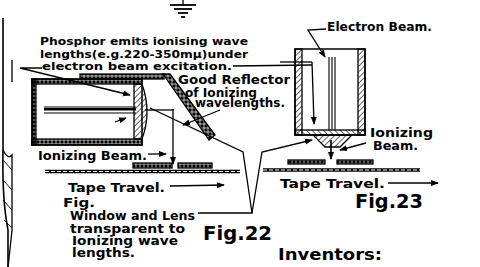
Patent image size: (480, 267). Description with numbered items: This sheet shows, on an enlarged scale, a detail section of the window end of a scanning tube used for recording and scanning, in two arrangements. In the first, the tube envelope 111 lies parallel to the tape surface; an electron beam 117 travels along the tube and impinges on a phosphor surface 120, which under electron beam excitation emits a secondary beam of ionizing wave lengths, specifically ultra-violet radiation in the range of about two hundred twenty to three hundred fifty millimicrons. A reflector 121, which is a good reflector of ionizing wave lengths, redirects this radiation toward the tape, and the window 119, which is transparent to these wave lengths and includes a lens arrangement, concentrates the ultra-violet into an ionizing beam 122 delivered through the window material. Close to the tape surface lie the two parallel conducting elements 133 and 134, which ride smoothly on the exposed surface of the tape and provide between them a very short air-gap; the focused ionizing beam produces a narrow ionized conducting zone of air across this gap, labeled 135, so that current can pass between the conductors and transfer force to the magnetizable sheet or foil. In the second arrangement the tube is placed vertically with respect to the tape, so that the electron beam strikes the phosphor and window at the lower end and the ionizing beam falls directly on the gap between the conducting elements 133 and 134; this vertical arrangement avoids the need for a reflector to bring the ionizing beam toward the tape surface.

In FIG. 22, the cathode ray tube envelope 111 is at (47, 94).
In FIG. 22, the electron beam 117 is at (44, 104).
In FIG. 23, the electron beam 117 is at (321, 79).
In FIG. 22, the phosphor screen and lens 119 is at (145, 140).
In FIG. 22, the phosphor layer 120 is at (145, 88).
In FIG. 22, the reflector of ionizing wavelengths 121 is at (203, 130).
In FIG. 22, the ionizing beam 122 is at (174, 150).
In FIG. 22, the parallel conducting element 133 is at (140, 168).
In FIG. 23, the parallel conducting element 133 is at (303, 152).
In FIG. 22, the parallel conducting element 134 is at (196, 170).
In FIG. 23, the parallel conducting element 134 is at (377, 164).
In FIG. 22, the tape segment / ionizing beam spot 135 is at (175, 164).
In FIG. 23, the tape segment / ionizing beam spot 135 is at (337, 158).